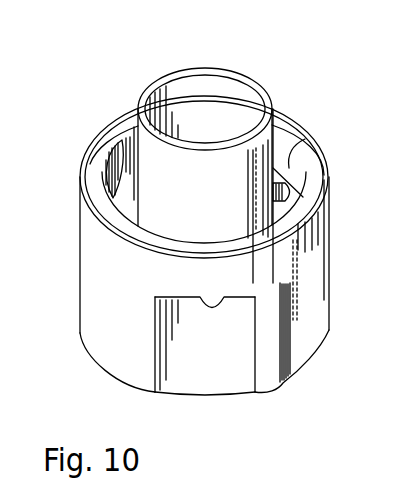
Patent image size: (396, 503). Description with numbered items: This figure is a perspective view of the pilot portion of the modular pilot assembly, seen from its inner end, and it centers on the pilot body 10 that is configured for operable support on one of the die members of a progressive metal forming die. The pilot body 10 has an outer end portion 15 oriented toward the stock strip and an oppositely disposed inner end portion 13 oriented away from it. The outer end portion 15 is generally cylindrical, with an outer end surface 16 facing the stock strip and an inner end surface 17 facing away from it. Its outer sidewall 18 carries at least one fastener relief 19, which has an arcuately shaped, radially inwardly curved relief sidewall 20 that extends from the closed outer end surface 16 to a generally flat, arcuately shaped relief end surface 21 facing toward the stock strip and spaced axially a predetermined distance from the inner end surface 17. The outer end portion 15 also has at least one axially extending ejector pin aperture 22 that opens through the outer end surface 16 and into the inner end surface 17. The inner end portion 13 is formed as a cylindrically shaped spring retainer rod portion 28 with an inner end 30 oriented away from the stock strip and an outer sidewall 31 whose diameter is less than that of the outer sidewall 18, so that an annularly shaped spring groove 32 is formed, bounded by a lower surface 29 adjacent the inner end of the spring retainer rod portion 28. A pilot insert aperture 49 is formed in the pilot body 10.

The pilot body 10 is at (303, 119).
The inner end portion 13 is at (84, 165).
The outer end portion 15 is at (80, 275).
The outer end surface 16 is at (100, 367).
The inner end surface 17 is at (283, 124).
The outer sidewall 18 is at (88, 325).
The fastener relief 19 is at (180, 373).
The relief sidewall 20 is at (170, 347).
The relief end surface 21 is at (206, 300).
The ejector pin aperture 22 is at (284, 195).
The spring retainer rod portion 28 is at (126, 136).
The lower surface 29 is at (113, 166).
The inner end 30 is at (200, 67).
The outer sidewall 31 is at (160, 185).
The spring groove 32 is at (305, 139).
The pilot insert aperture 49 is at (218, 97).